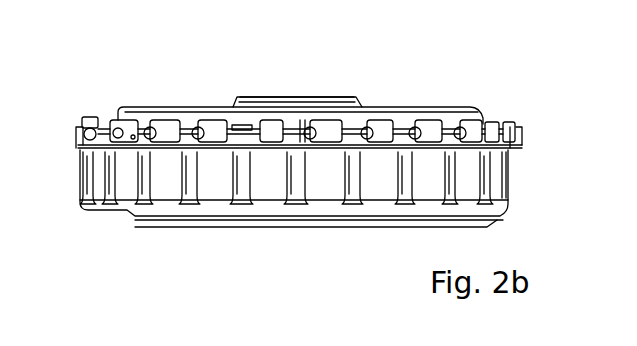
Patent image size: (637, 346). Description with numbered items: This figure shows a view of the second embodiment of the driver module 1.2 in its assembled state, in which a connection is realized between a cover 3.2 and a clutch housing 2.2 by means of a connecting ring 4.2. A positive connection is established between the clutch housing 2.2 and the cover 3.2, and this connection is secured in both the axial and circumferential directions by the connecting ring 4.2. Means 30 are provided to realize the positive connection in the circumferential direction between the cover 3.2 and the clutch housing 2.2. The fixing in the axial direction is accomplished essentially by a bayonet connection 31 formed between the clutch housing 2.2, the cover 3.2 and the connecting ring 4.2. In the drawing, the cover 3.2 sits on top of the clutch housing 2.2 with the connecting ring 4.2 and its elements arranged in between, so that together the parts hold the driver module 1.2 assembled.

The driver module 1.2 is at (367, 103).
The clutch housing 2.2 is at (170, 206).
The cover 3.2 is at (141, 132).
The connecting ring 4.2 is at (237, 121).
The means for realizing a positive connection in the circumferential direction 30 is at (134, 136).
The bayonet connection 31 is at (313, 128).